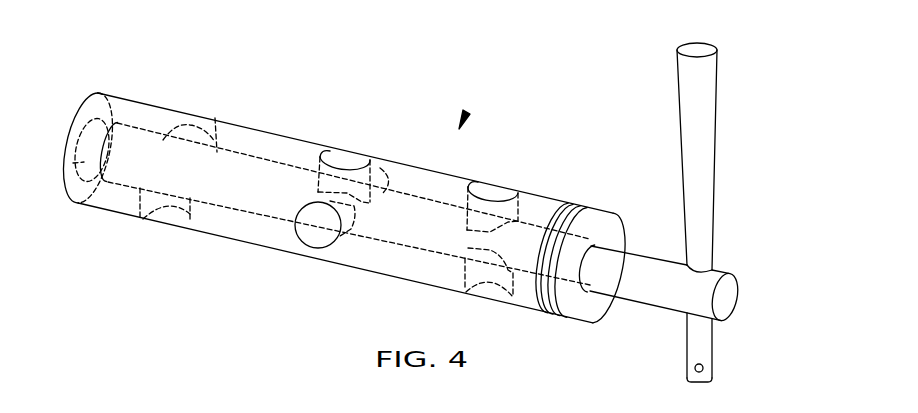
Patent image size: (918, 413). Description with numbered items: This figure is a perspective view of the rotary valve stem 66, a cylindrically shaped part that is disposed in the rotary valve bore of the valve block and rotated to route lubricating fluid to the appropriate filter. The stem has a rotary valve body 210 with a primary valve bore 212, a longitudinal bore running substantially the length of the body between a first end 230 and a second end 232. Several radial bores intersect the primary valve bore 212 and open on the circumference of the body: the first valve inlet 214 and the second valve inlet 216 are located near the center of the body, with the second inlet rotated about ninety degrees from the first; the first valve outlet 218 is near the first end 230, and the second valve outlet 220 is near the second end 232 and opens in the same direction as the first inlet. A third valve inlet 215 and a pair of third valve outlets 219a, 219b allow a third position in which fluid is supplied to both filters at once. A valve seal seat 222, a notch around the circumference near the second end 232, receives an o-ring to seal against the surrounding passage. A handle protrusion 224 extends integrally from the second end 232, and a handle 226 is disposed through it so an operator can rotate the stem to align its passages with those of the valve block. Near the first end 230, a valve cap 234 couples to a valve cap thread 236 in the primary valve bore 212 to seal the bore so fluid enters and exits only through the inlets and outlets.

The rotary valve stem 66 is at (471, 113).
The rotary valve body 210 is at (270, 250).
The primary valve bore 212 is at (400, 247).
The first valve inlet 214 is at (337, 157).
The third valve inlet 215 is at (387, 168).
The second valve inlet 216 is at (313, 232).
The first valve outlet 218 is at (218, 120).
The third valve outlet 219a is at (170, 227).
The third valve outlet 219b is at (488, 290).
The second valve outlet 220 is at (495, 190).
The valve seal seat 222 is at (558, 280).
The handle protrusion 224 is at (732, 285).
The handle 226 is at (707, 85).
The first end 230 is at (88, 93).
The second end 232 is at (625, 227).
The valve cap 234 is at (67, 140).
The valve cap thread 236 is at (62, 165).